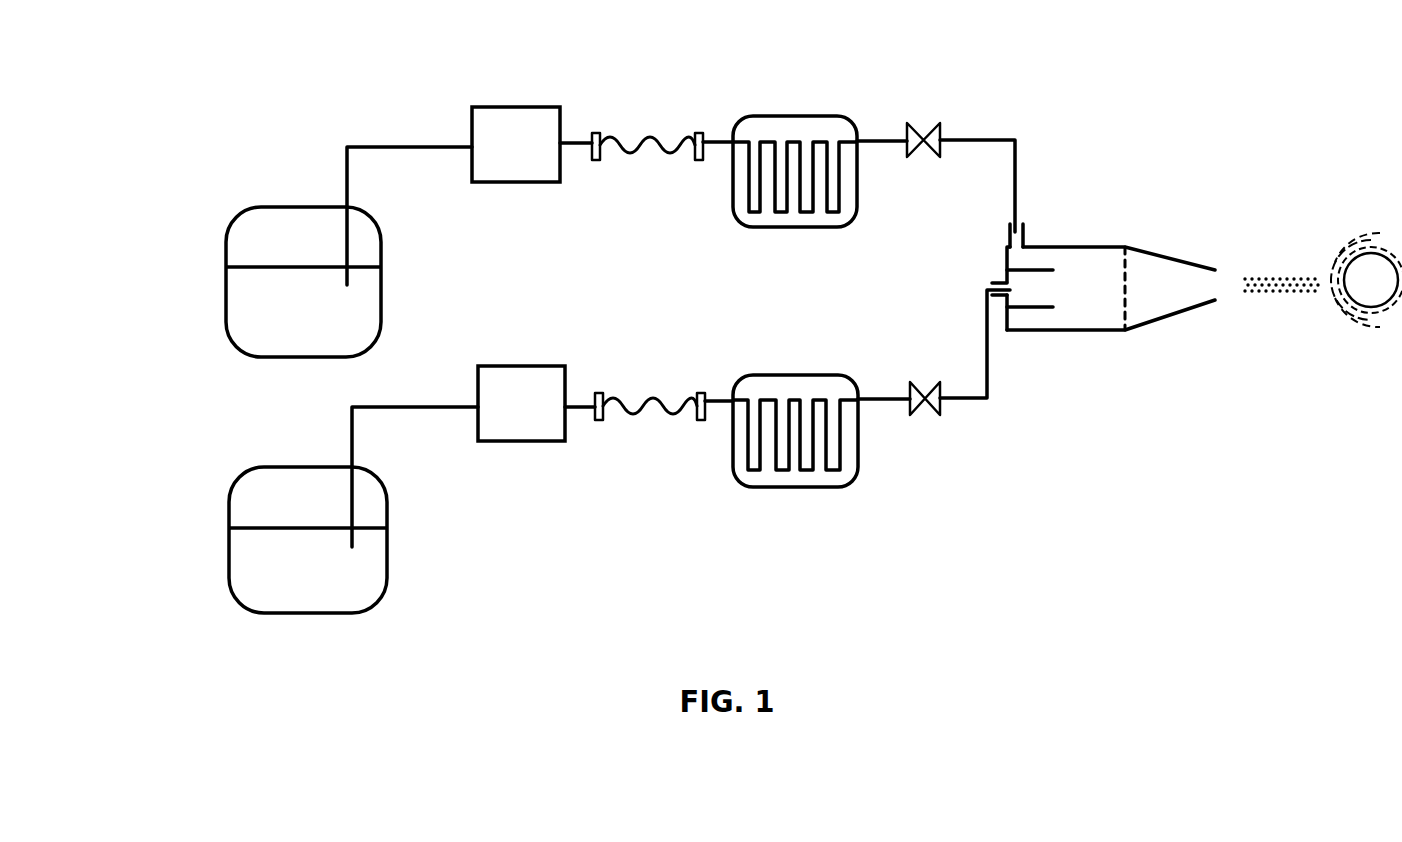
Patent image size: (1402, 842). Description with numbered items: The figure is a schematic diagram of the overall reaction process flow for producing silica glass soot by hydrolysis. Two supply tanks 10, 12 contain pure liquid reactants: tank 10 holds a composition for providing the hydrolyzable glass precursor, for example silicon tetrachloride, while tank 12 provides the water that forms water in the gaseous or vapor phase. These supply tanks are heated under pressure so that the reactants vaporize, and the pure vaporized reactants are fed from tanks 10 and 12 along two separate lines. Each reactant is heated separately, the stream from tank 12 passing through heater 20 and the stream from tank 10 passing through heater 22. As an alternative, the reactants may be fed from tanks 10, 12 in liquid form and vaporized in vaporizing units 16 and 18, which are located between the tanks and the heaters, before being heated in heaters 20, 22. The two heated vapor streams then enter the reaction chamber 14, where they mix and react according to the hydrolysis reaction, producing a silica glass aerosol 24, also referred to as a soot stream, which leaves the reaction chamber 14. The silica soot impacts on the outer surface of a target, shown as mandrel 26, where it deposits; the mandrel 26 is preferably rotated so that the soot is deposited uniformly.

The supply tank 10 is at (257, 556).
The supply tank 12 is at (248, 305).
The reaction chamber 14 is at (1105, 292).
The vaporizing unit 16 is at (520, 135).
The vaporizing unit 18 is at (532, 430).
The heater 20 is at (790, 132).
The heater 22 is at (783, 472).
The silica glass aerosol 24 is at (1303, 302).
The mandrel 26 is at (1397, 243).